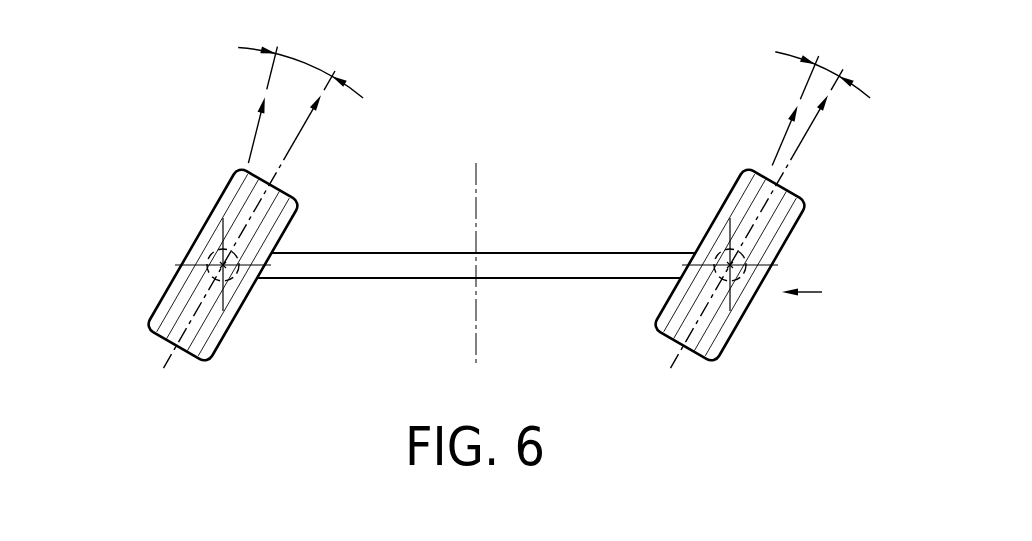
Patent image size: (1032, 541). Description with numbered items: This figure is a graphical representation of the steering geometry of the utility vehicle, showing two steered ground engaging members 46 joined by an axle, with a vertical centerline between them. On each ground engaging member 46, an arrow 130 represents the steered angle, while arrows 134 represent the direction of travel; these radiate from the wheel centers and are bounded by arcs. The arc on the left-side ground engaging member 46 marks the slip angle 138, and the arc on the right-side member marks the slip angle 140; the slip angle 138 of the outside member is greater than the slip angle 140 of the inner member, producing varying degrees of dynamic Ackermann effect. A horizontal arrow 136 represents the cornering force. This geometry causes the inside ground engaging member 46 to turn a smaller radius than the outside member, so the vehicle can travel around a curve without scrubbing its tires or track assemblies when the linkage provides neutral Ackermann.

The ground engaging member 46 is at (143, 330).
The steered angle arrow 130 is at (288, 150).
The direction of travel arrow 134 is at (250, 143).
The cornering force arrow 136 is at (822, 292).
The slip angle 138 is at (302, 62).
The slip angle 140 is at (832, 65).